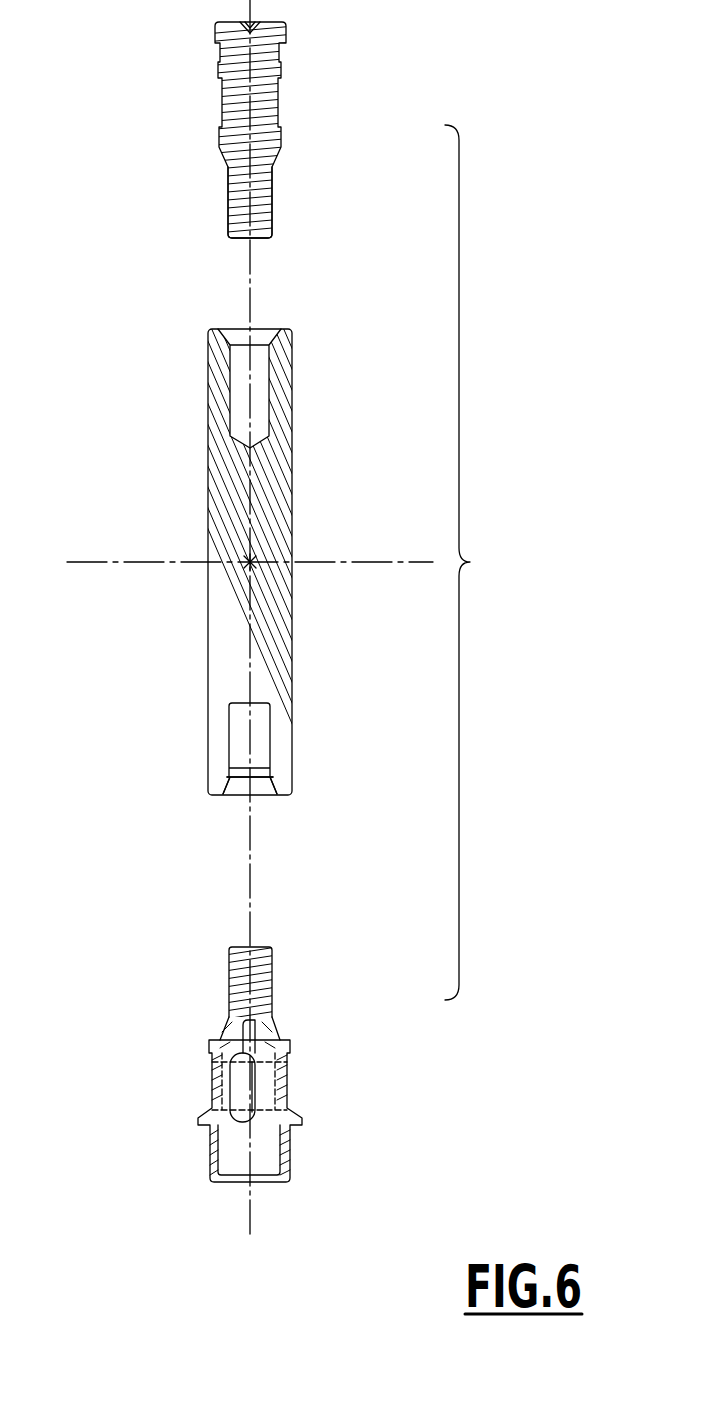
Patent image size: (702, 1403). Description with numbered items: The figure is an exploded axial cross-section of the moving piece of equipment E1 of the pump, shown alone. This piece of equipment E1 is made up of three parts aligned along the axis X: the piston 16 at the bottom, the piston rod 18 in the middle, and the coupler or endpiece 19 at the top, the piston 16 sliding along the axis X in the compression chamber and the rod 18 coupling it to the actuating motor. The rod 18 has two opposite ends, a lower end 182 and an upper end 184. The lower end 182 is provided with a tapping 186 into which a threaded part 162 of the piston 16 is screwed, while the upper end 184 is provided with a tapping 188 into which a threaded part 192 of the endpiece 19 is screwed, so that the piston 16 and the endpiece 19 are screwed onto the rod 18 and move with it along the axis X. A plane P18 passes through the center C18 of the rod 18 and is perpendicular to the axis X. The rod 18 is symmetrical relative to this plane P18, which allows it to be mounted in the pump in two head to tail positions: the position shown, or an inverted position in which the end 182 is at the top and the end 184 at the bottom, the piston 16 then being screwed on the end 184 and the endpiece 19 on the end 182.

The piston 16 is at (292, 1055).
The threaded part of piston 162 is at (228, 981).
The piston rod 18 is at (304, 529).
The lower end of rod 182 is at (232, 726).
The upper end of rod 184 is at (277, 358).
The tapping 186 is at (228, 780).
The tapping 188 is at (242, 372).
The coupler (endpiece) 19 is at (280, 146).
The threaded part of endpiece 192 is at (228, 203).
The center of rod C18 is at (257, 567).
The plane P18 is at (232, 562).
The piece of equipment E1 is at (473, 562).
The axis X is at (249, 630).